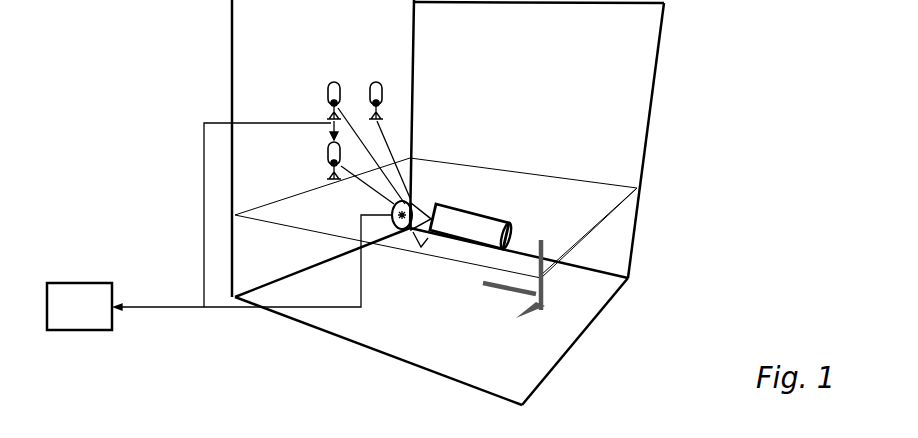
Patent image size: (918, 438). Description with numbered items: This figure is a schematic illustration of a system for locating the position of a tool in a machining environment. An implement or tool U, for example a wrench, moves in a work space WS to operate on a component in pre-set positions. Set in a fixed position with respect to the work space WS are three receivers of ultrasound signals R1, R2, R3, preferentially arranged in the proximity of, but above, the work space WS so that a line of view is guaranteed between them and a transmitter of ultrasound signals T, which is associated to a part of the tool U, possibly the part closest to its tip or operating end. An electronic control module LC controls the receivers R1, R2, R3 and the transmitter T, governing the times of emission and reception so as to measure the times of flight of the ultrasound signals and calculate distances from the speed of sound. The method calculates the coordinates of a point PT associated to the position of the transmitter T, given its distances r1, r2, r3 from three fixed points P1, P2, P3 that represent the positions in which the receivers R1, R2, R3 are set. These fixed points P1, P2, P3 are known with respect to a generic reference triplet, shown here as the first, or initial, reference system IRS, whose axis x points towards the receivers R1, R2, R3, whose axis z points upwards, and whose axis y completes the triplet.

The electronic control module LC is at (84, 293).
The receiver of ultrasound signals R1 is at (335, 180).
The receiver of ultrasound signals R2 is at (374, 82).
The receiver of ultrasound signals R3 is at (333, 82).
The fixed point P1 is at (328, 156).
The fixed point P2 is at (383, 100).
The fixed point P3 is at (327, 97).
The distance r1 is at (367, 180).
The distance r2 is at (393, 159).
The distance r3 is at (371, 156).
The transmitter of ultrasound signals T is at (403, 236).
The point associated to the transmitter position PT is at (405, 238).
The tool U is at (482, 208).
The work space WS is at (573, 182).
The initial reference system IRS is at (550, 264).
The axis x is at (500, 284).
The axis y is at (530, 290).
The axis z is at (589, 231).